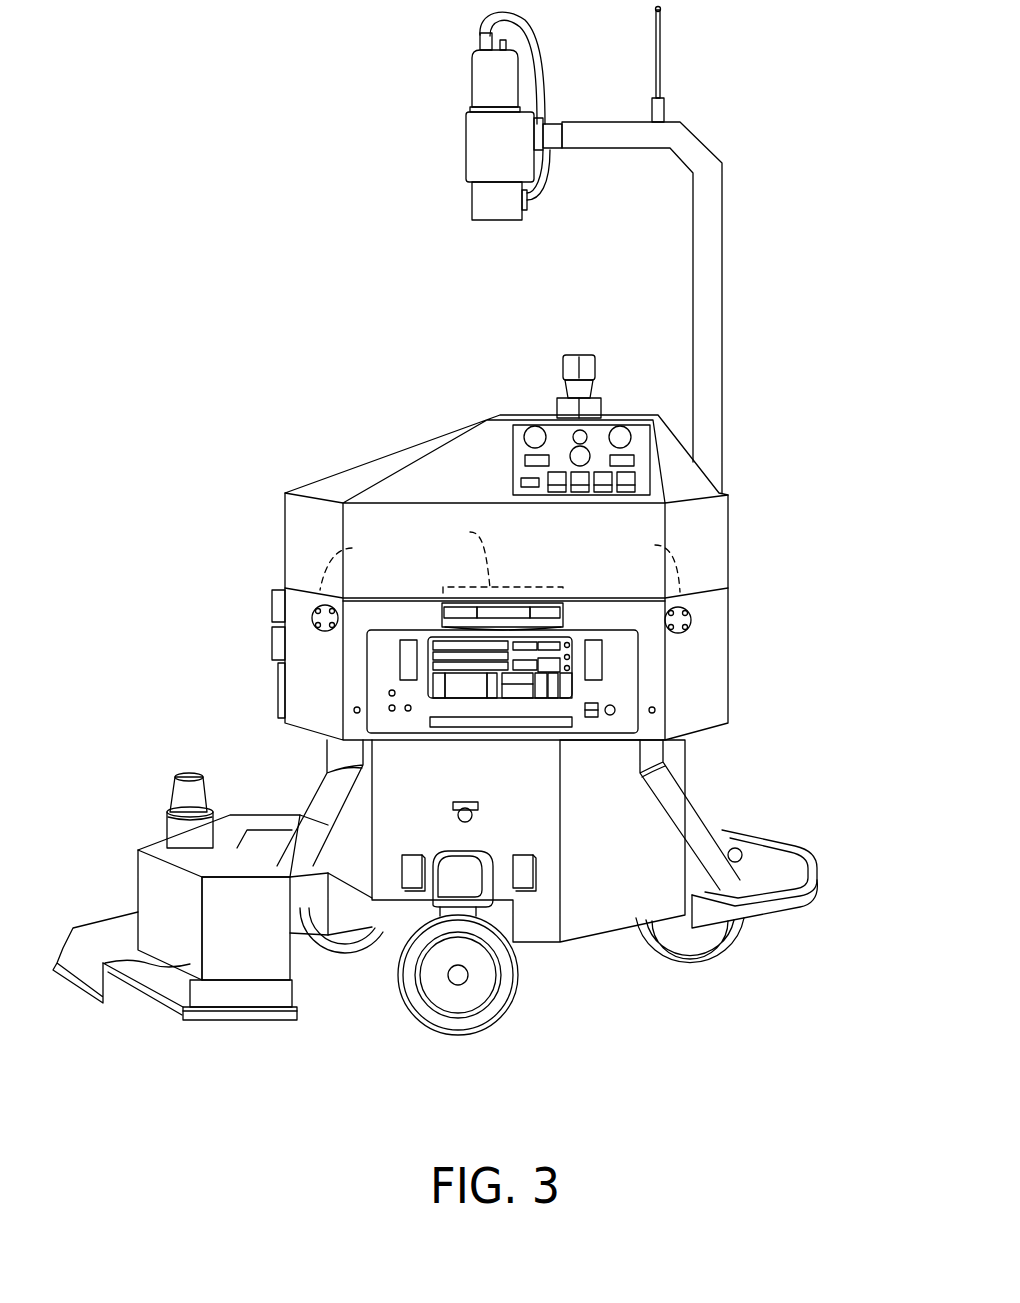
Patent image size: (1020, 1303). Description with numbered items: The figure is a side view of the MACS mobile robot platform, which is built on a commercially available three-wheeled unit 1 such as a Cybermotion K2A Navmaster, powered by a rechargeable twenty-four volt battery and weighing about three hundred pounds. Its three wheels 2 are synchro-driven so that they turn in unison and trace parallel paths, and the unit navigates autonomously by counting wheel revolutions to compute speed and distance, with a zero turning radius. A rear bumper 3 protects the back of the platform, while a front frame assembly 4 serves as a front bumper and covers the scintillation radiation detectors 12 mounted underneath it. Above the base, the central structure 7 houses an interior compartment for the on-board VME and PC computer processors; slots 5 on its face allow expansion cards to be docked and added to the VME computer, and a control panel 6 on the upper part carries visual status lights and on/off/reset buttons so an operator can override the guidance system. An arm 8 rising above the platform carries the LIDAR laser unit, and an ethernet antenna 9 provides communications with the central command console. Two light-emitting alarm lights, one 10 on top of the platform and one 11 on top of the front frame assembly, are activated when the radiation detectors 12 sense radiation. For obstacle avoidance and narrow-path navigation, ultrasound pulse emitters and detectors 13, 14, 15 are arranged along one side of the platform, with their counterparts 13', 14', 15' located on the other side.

The three-wheeled unit 1 is at (592, 900).
The wheels 2 is at (500, 1003).
The rear bumper 3 is at (787, 895).
The front frame assembly 4 is at (108, 933).
The slots 5 is at (530, 657).
The control panel 6 is at (597, 445).
The central structure 7 is at (297, 532).
The arm 8 is at (472, 82).
The ethernet antenna 9 is at (662, 50).
The alarm light 10 is at (600, 367).
The alarm light 11 is at (190, 775).
The radiation detectors 12 is at (143, 1002).
The ultrasound pulse emitter and detector 13 is at (313, 649).
The ultrasound pulse emitter and detector 14 is at (469, 616).
The ultrasound pulse emitter and detector 15 is at (652, 617).
The ultrasound pulse emitter and detector 13' is at (366, 562).
The ultrasound pulse emitter and detector 14' is at (496, 556).
The ultrasound pulse emitter and detector 15' is at (646, 560).